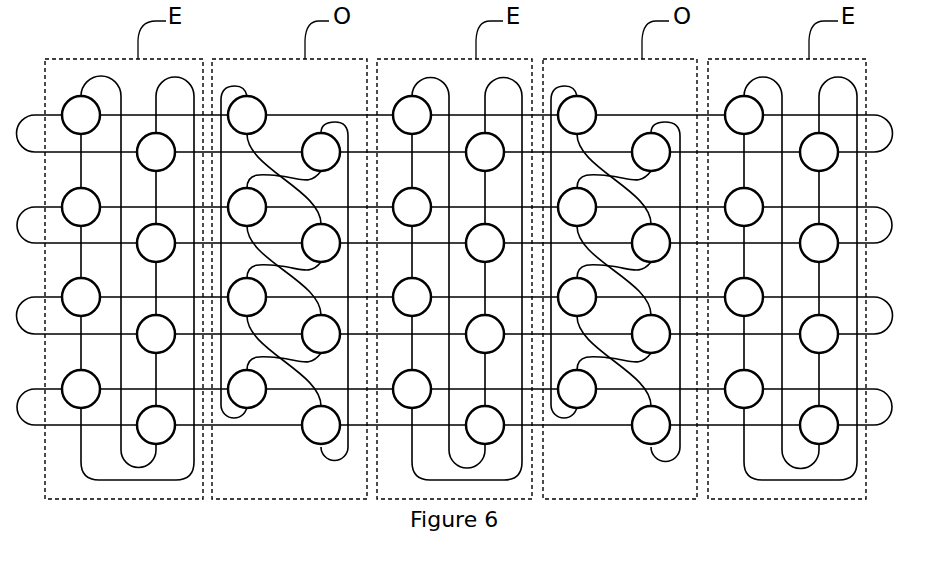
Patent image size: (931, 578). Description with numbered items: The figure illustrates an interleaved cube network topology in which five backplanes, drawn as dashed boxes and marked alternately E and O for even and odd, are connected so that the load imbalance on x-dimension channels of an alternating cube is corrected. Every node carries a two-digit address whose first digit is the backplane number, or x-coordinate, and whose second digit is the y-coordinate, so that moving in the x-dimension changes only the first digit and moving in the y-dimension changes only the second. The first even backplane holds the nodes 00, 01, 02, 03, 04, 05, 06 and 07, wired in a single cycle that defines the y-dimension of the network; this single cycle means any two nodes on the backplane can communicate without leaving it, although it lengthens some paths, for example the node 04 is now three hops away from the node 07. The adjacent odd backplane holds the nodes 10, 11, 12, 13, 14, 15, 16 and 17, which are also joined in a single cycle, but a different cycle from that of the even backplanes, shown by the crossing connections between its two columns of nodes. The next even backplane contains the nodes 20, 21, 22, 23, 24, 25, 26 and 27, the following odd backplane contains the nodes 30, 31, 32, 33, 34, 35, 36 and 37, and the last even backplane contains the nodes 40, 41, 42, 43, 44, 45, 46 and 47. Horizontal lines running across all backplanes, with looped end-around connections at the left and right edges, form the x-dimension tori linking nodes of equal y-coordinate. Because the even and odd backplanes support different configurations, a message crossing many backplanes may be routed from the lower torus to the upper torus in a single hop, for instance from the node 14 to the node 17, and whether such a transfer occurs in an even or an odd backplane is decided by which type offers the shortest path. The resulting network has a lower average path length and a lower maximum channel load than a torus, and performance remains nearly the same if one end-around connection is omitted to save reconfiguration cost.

The node 00 is at (156, 425).
The node 01 is at (156, 334).
The node 02 is at (156, 243).
The node 03 is at (156, 152).
The node 04 is at (81, 389).
The node 05 is at (81, 297).
The node 06 is at (81, 207).
The node 07 is at (81, 115).
The node 10 is at (321, 425).
The node 11 is at (321, 334).
The node 12 is at (321, 243).
The node 13 is at (321, 152).
The node 14 is at (247, 389).
The node 15 is at (247, 297).
The node 16 is at (247, 207).
The node 17 is at (247, 115).
The node 20 is at (485, 425).
The node 21 is at (485, 334).
The node 22 is at (485, 243).
The node 23 is at (485, 152).
The node 24 is at (412, 389).
The node 25 is at (412, 297).
The node 26 is at (412, 207).
The node 27 is at (412, 115).
The node 30 is at (651, 425).
The node 31 is at (651, 334).
The node 32 is at (651, 243).
The node 33 is at (651, 152).
The node 34 is at (577, 389).
The node 35 is at (577, 297).
The node 36 is at (577, 207).
The node 37 is at (577, 115).
The node 40 is at (819, 425).
The node 41 is at (819, 334).
The node 42 is at (819, 243).
The node 43 is at (819, 152).
The node 44 is at (744, 389).
The node 45 is at (744, 297).
The node 46 is at (744, 207).
The node 47 is at (744, 115).